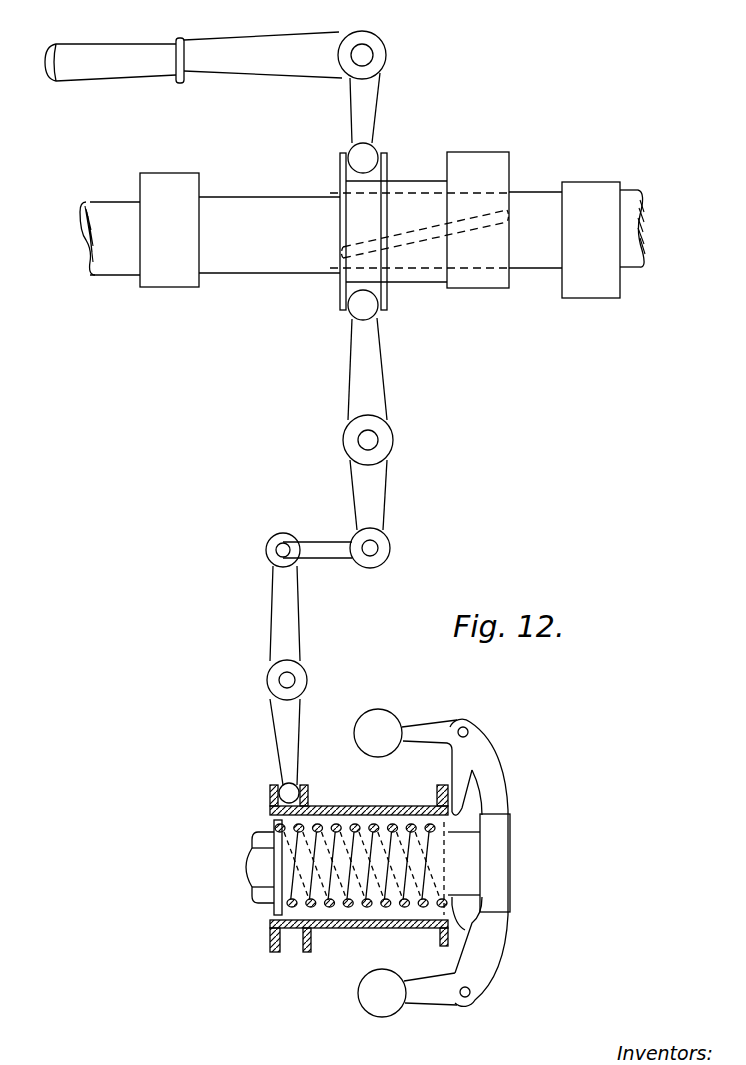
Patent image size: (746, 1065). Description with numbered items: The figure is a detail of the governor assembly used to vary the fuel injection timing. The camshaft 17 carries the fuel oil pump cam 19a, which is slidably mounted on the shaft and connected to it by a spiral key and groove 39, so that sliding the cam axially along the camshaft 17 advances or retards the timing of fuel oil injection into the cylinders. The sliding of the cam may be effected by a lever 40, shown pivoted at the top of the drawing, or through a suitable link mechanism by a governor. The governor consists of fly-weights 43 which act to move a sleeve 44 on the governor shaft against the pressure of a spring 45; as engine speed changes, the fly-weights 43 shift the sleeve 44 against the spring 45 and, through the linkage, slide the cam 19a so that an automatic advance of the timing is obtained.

The camshaft 17 is at (276, 178).
The fuel oil pump cam 19a is at (479, 146).
The spiral key and groove 39 is at (433, 243).
The lever 40 is at (263, 72).
The fly-weights 43 is at (402, 717).
The sleeve 44 is at (420, 800).
The spring 45 is at (344, 822).